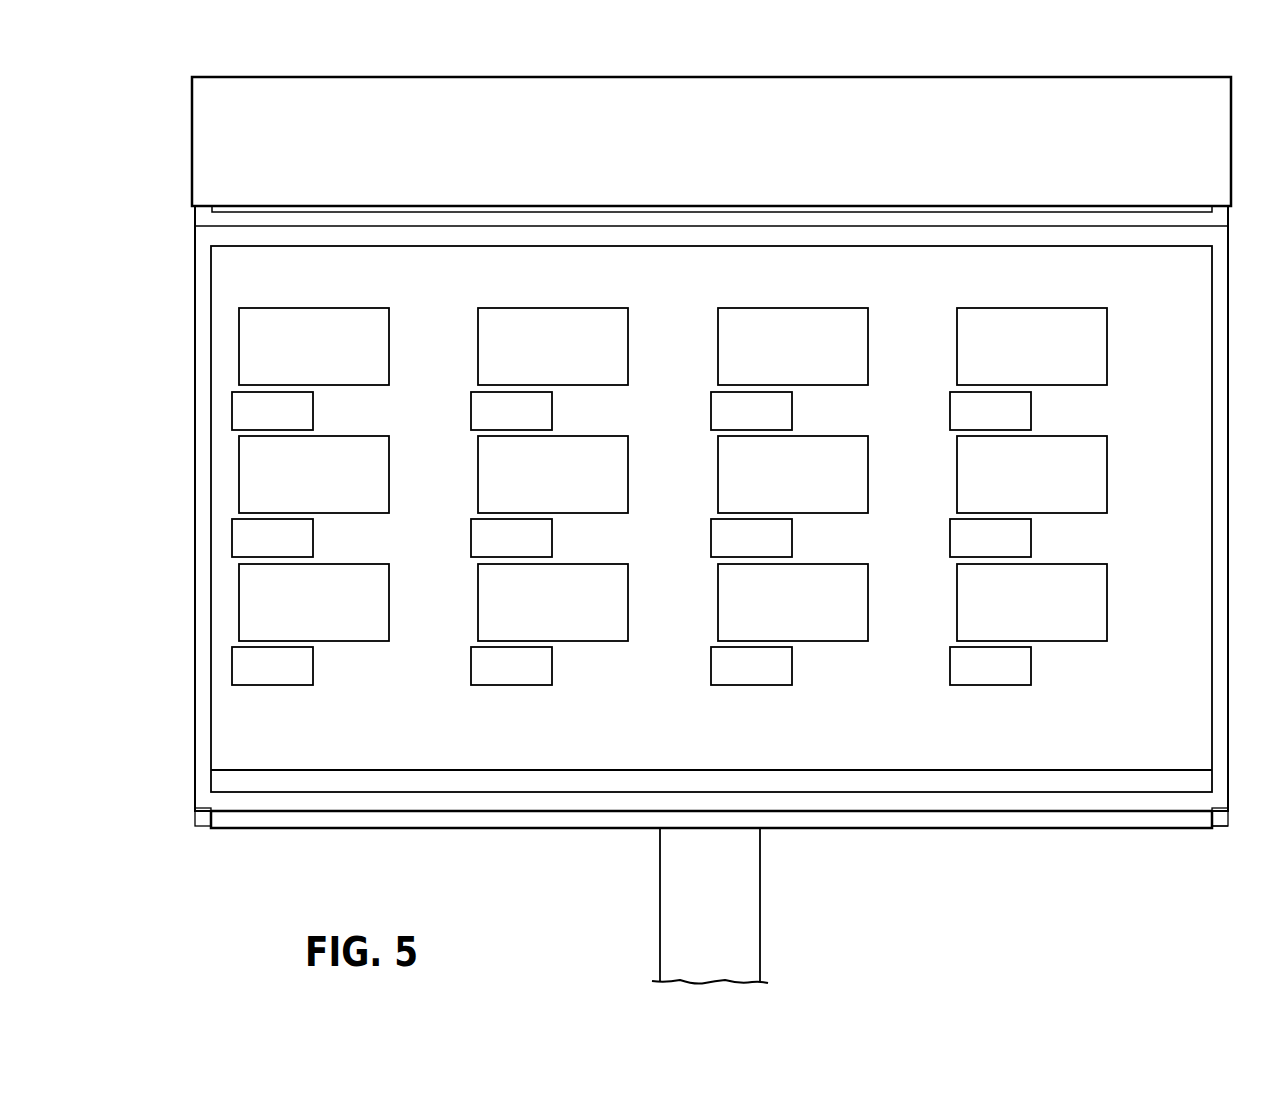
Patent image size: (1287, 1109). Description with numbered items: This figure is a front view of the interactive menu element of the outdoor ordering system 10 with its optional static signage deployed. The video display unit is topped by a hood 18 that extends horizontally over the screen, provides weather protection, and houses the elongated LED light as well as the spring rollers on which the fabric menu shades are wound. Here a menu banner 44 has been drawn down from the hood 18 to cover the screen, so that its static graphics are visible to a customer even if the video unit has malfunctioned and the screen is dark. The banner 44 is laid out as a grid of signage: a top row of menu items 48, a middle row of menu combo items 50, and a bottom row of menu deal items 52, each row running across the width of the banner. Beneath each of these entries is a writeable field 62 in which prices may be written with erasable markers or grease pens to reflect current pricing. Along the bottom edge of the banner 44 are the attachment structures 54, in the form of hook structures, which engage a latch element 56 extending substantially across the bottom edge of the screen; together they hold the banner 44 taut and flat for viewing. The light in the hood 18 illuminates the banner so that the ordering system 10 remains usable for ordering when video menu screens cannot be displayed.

The outdoor ordering system 10 is at (150, 126).
The hood 18 is at (1210, 150).
The menu banner 44 is at (711, 519).
The menu items 48 is at (389, 342).
The menu combo items 50 is at (389, 470).
The menu deal items 52 is at (389, 597).
The attachment structures 54 is at (1145, 829).
The latch element 56 is at (1218, 818).
The writeable fields 62 is at (313, 411).